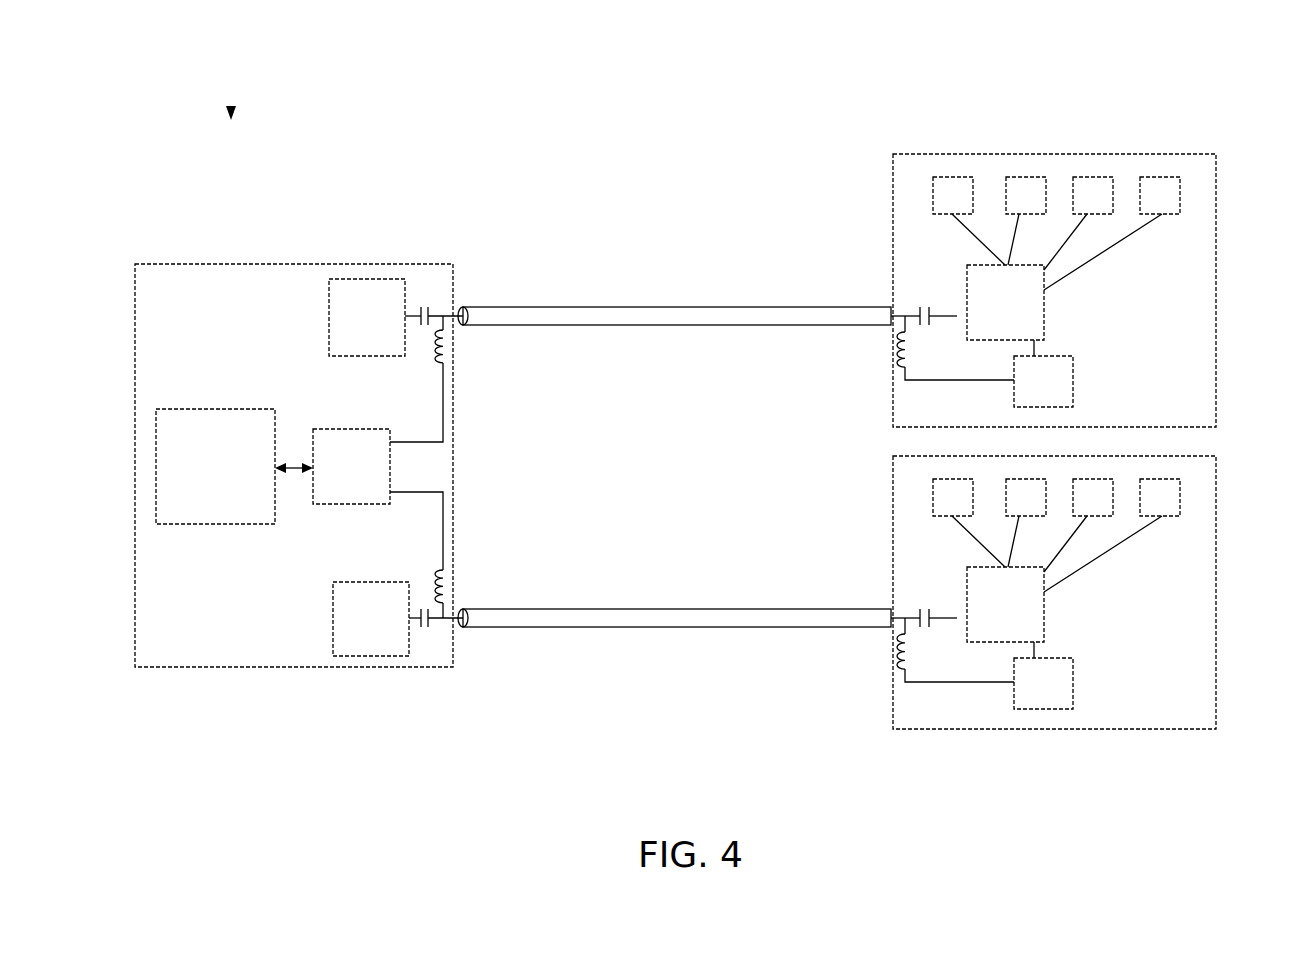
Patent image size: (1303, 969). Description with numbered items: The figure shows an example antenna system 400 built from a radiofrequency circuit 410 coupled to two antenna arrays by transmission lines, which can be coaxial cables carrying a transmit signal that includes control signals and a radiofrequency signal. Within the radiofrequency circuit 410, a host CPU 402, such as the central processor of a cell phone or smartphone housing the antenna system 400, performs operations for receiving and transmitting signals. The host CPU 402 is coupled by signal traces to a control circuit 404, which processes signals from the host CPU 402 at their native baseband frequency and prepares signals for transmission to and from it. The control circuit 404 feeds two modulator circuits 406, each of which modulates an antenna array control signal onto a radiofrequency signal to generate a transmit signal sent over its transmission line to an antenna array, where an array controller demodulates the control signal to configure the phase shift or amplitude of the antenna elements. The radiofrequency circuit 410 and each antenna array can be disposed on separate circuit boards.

The antenna system 400 is at (231, 115).
The radiofrequency circuit 410 is at (235, 263).
The host CPU 402 is at (227, 407).
The control circuit 404 is at (335, 428).
The modulator circuit 406 is at (358, 279).